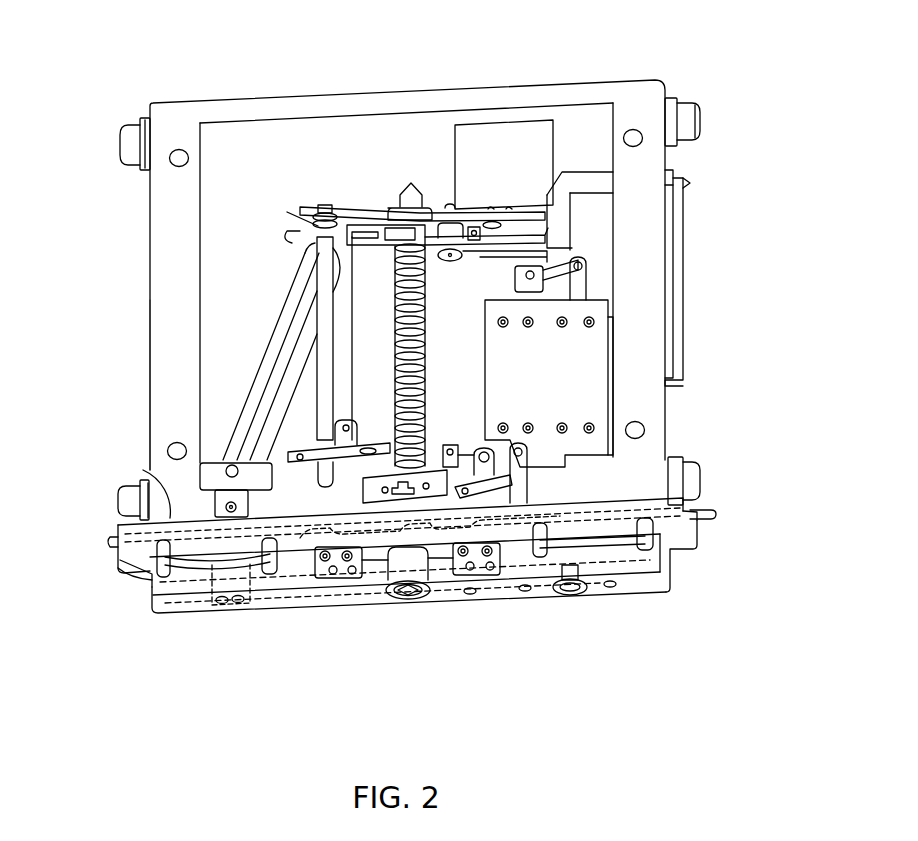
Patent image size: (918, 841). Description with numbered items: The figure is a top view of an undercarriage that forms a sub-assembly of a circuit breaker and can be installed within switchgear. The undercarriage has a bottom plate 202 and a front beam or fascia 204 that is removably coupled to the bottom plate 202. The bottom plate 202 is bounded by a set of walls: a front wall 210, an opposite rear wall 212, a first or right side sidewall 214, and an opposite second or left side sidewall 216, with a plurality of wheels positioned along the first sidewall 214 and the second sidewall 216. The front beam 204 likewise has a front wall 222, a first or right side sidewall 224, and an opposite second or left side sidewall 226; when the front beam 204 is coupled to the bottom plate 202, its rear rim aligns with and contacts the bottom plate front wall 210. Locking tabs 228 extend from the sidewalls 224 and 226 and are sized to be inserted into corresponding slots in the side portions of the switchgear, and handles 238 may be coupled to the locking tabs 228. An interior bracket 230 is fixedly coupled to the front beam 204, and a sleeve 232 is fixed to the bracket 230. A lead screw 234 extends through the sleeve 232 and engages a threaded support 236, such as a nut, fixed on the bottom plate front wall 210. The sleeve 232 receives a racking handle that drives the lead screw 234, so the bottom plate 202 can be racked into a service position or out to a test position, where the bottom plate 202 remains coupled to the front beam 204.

The bottom plate 202 is at (177, 113).
The rear wall 212 is at (312, 98).
The first sidewall 214 is at (158, 220).
The second sidewall 216 is at (645, 165).
The front wall 210 is at (143, 470).
The locking tabs 228 is at (113, 532).
The first sidewall 224 is at (120, 562).
The handles 238 is at (148, 580).
The front beam 204 is at (282, 600).
The front wall 222 is at (635, 583).
The second sidewall 226 is at (698, 537).
The interior bracket 230 is at (480, 567).
The sleeve 232 is at (380, 588).
The lead screw 234 is at (428, 270).
The threaded support 236 is at (437, 465).